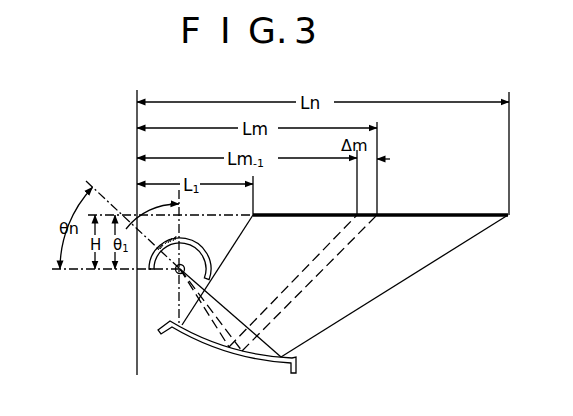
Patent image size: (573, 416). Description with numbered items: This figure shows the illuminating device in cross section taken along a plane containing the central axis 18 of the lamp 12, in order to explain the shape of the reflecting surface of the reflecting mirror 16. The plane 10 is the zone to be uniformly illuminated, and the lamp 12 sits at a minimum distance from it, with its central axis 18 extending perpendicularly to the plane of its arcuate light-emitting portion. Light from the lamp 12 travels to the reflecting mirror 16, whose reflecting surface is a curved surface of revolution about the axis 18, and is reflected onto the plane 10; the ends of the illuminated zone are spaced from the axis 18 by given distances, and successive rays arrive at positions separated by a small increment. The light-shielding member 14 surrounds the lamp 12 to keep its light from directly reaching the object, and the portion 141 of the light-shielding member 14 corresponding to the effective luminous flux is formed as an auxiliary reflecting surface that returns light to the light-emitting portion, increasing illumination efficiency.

The plane 10 is at (408, 217).
The lamp 12 is at (176, 274).
The light-shielding member 14 is at (213, 262).
The portion of the light-shielding member 141 is at (174, 243).
The reflecting mirror 16 is at (247, 360).
The central axis 18 is at (136, 333).